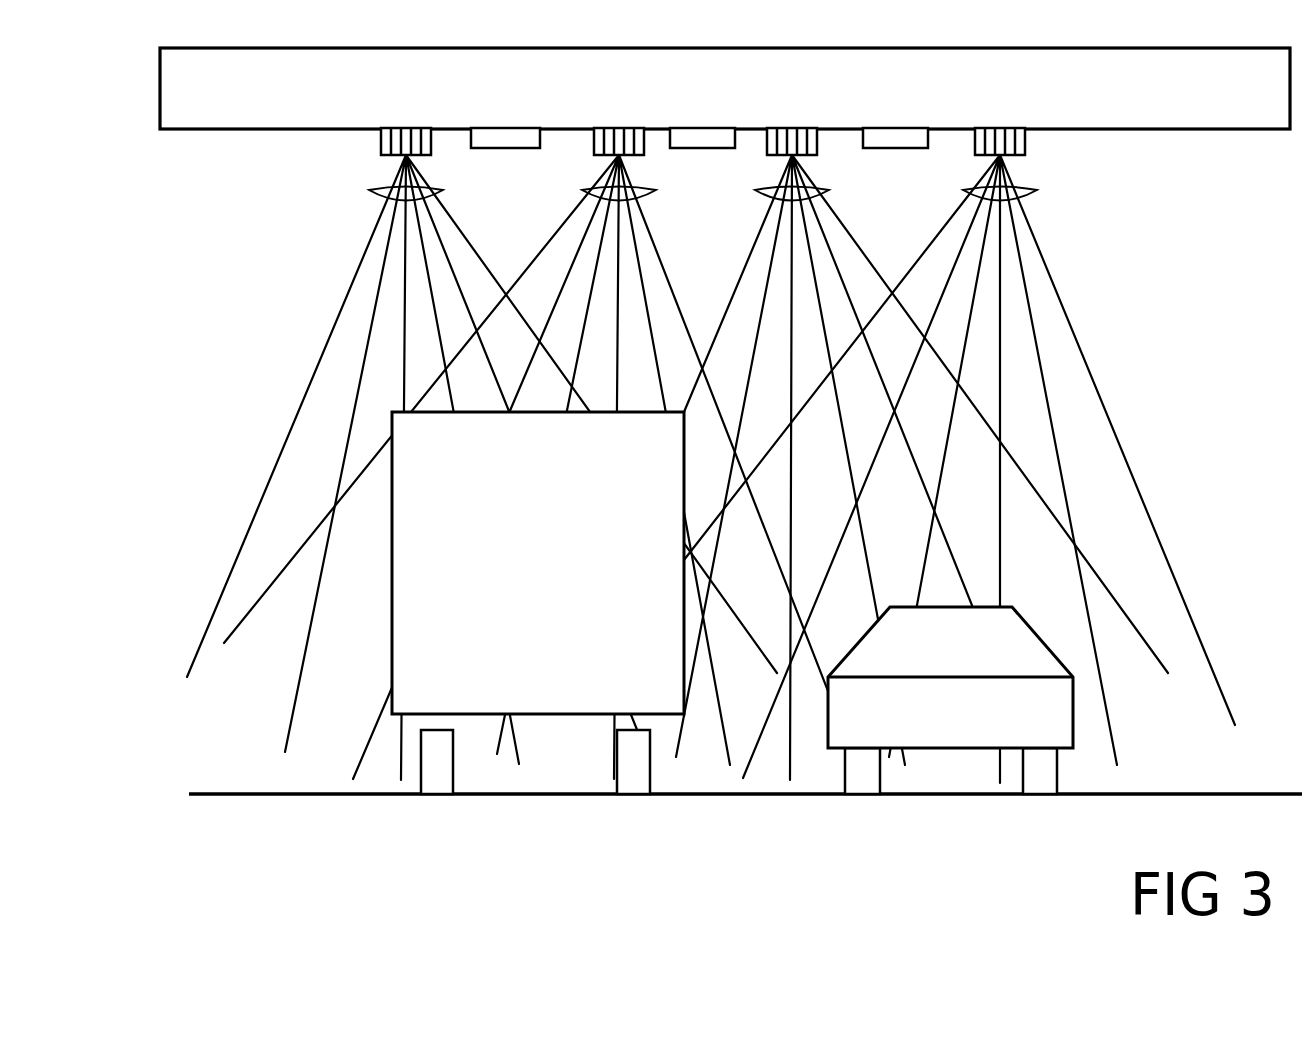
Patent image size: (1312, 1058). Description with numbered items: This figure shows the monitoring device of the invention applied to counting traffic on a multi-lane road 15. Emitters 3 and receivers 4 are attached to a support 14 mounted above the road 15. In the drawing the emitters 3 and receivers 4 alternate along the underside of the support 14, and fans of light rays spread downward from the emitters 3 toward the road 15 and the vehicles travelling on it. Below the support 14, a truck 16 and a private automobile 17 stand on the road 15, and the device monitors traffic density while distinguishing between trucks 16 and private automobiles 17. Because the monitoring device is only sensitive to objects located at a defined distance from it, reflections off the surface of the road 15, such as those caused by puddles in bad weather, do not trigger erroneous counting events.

The emitter 3 is at (507, 148).
The receiver 4 is at (350, 168).
The support 14 is at (1207, 113).
The road 15 is at (237, 793).
The truck 16 is at (560, 586).
The private automobile 17 is at (962, 724).